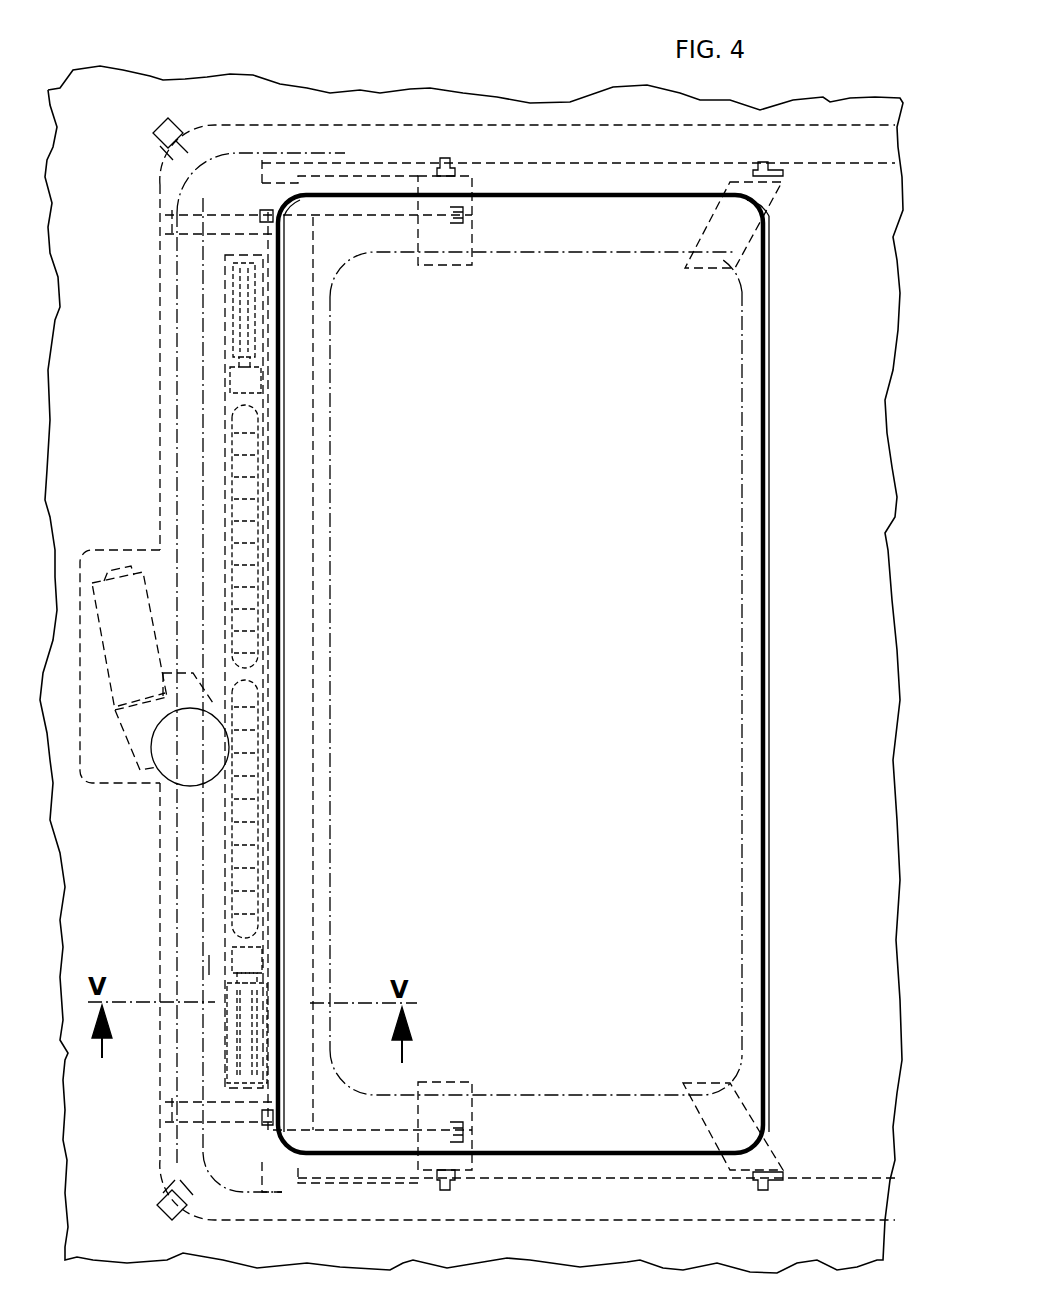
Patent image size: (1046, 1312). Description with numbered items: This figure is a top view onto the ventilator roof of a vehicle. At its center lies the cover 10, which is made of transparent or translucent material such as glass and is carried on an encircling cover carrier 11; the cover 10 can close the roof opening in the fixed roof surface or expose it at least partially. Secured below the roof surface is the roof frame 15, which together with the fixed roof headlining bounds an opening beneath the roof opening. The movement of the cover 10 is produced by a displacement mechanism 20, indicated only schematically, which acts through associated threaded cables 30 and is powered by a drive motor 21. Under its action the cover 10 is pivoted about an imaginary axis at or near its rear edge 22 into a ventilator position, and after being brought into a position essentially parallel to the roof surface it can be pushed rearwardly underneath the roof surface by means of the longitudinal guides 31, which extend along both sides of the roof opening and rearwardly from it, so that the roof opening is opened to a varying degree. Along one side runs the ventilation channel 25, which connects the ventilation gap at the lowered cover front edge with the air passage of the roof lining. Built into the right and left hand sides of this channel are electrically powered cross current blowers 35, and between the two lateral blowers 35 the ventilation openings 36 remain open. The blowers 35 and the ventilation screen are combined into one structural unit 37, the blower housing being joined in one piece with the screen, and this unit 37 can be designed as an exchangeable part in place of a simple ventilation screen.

The cover 10 is at (578, 634).
The cover carrier 11 is at (503, 220).
The roof frame 15 is at (221, 128).
The displacement mechanism 20 is at (348, 146).
The drive motor 21 is at (128, 587).
The rear edge 22 is at (766, 468).
The ventilation channel 25 is at (237, 942).
The threaded cables 30 is at (202, 400).
The longitudinal guides 31 is at (597, 150).
The cross current blower 35 is at (240, 310).
The ventilation openings 36 is at (240, 487).
The structural unit 37 is at (213, 963).